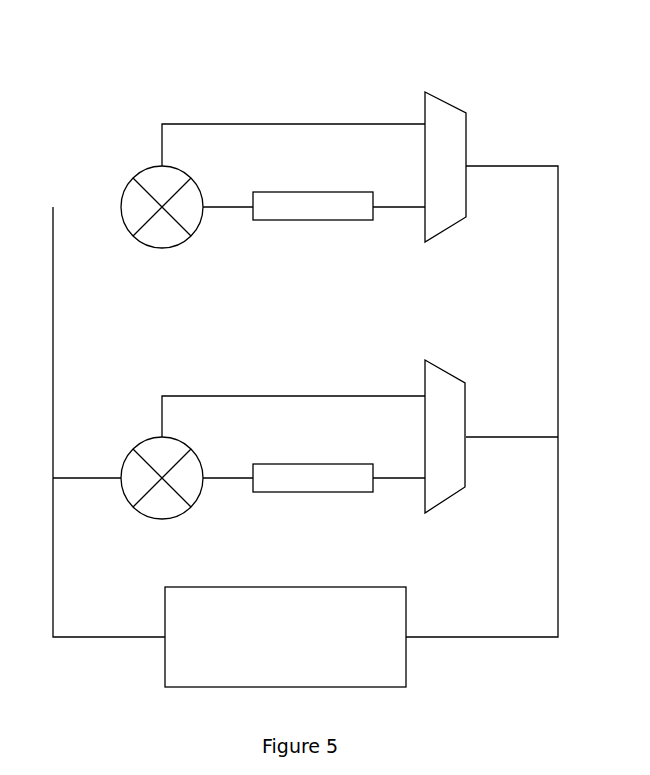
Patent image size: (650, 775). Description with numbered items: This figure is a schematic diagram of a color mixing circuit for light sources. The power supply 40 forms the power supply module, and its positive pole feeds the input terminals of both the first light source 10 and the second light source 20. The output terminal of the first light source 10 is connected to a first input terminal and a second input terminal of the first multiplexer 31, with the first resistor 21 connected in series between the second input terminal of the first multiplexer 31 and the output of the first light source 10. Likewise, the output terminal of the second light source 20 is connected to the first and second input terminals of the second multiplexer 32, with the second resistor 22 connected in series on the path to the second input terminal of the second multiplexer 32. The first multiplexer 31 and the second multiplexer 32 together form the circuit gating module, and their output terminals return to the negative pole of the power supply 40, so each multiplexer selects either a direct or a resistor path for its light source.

The first light source 10 is at (140, 168).
The second light source 20 is at (140, 440).
The first resistor 21 is at (325, 192).
The second resistor 22 is at (315, 464).
The first multiplexer 31 is at (433, 95).
The second multiplexer 32 is at (440, 370).
The power supply 40 is at (279, 586).